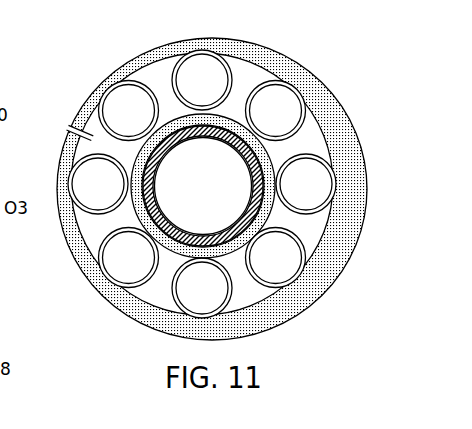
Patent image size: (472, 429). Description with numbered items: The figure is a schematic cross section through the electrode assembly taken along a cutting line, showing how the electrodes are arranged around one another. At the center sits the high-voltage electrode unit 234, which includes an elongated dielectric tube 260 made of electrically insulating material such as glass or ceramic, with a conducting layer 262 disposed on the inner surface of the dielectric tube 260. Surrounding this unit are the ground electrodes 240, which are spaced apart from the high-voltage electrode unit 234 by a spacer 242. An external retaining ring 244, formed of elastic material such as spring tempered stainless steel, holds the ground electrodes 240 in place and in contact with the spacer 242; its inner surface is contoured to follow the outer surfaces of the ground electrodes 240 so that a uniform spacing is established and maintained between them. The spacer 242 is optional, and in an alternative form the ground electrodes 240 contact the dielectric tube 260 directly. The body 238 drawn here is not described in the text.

The high-voltage electrode unit 234 is at (230, 254).
The body 238 is at (85, 246).
The ground electrodes 240 is at (297, 90).
The spacer 242 is at (172, 118).
The retaining ring 244 is at (260, 46).
The dielectric tube 260 is at (257, 197).
The conducting layer 262 is at (239, 222).